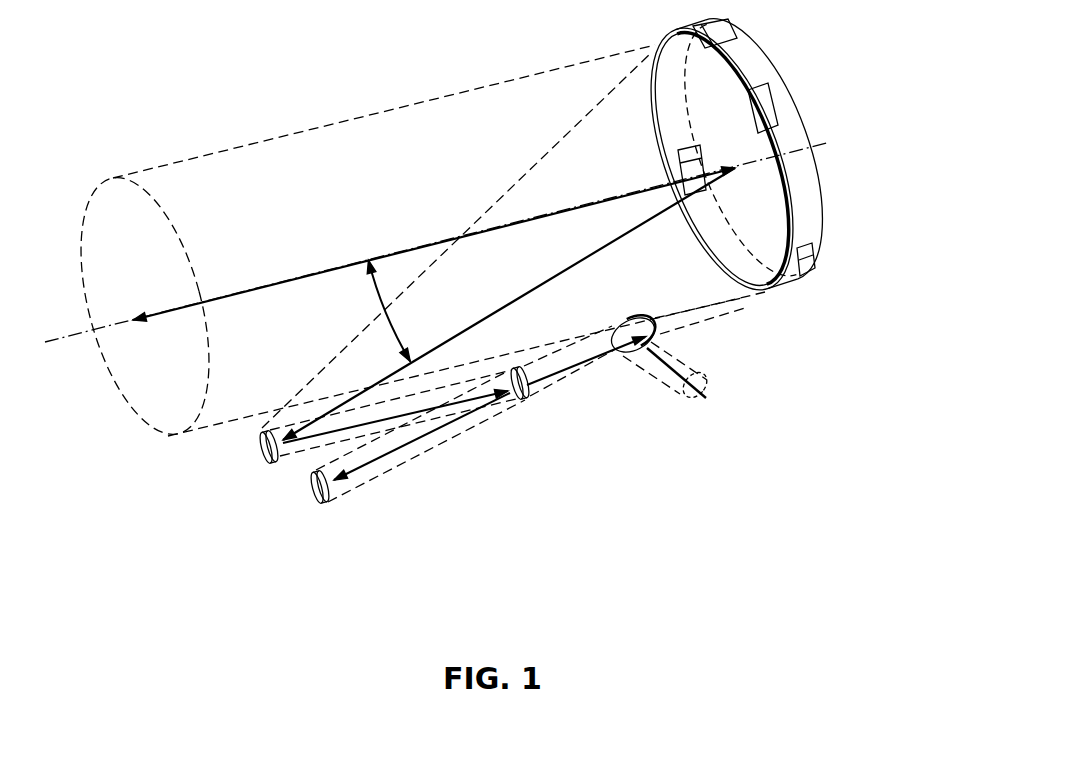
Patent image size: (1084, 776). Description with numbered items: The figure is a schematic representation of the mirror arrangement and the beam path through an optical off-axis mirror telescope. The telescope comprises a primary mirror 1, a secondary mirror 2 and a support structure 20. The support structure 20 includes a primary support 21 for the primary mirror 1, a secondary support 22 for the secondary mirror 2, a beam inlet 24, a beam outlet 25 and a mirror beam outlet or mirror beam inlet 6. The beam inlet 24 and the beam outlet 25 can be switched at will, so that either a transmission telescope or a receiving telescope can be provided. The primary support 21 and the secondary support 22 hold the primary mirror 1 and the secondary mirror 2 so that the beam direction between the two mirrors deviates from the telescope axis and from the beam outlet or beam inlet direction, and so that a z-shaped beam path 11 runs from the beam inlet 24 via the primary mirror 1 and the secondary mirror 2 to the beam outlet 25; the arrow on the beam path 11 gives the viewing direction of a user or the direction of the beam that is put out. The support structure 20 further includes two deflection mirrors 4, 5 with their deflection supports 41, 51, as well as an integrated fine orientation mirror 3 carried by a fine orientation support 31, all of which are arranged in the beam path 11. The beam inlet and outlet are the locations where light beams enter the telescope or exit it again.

The primary mirror 1 is at (755, 211).
The primary support 21 is at (740, 73).
The beam path 11 is at (316, 268).
The beam inlet 24 is at (112, 320).
The center point of ring G is at (588, 203).
The observation axis O is at (533, 290).
The secondary mirror 2 is at (232, 479).
The secondary support 22 is at (263, 459).
The fine orientation mirror 3 is at (550, 376).
The fine orientation support 31 is at (516, 369).
The deflection mirror 4 is at (325, 511).
The deflection support 41 is at (314, 491).
The deflection mirror 5 is at (662, 291).
The deflection support 51 is at (641, 318).
The mirror beam outlet or mirror beam inlet 6 is at (705, 393).
The beam outlet 25 is at (687, 395).
The support structure 20 is at (512, 442).